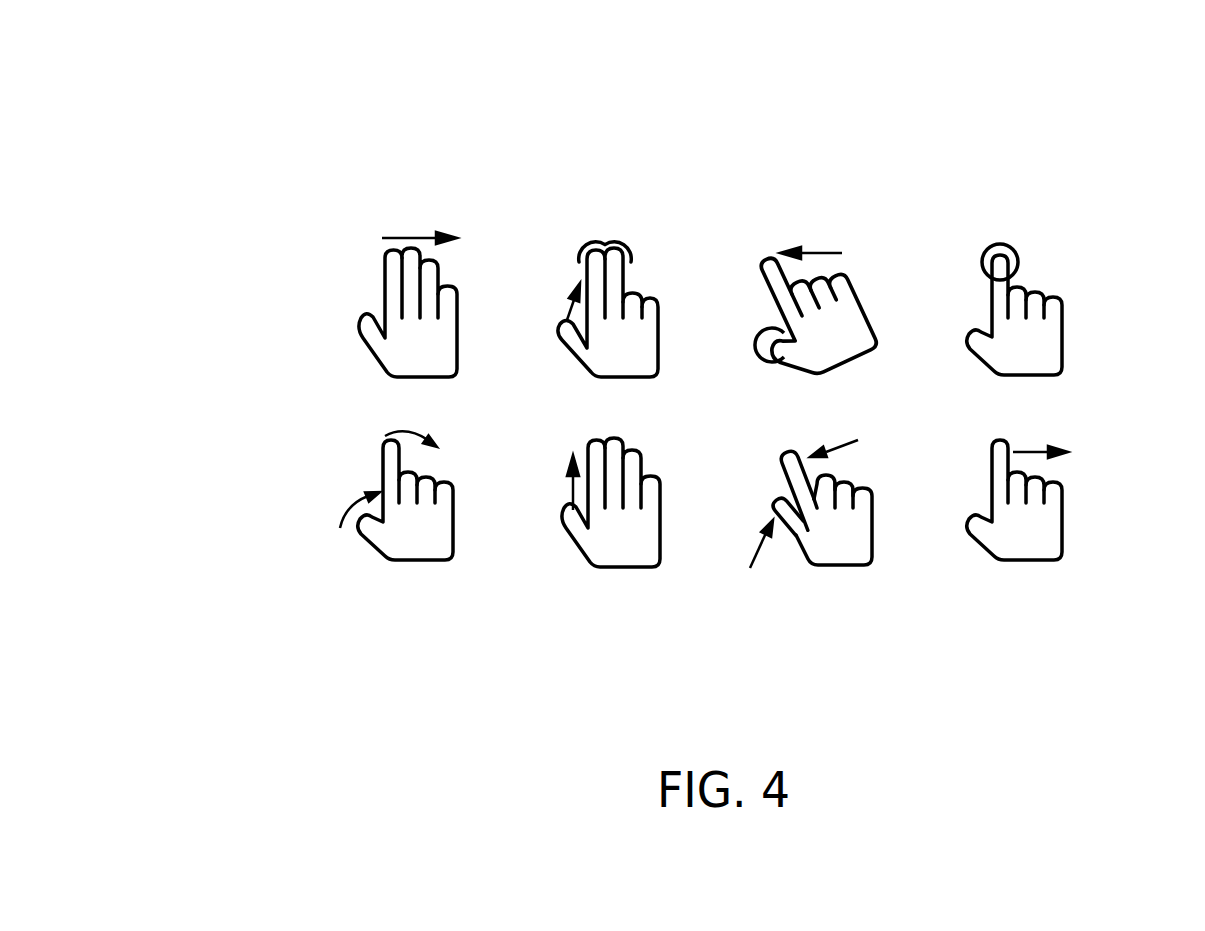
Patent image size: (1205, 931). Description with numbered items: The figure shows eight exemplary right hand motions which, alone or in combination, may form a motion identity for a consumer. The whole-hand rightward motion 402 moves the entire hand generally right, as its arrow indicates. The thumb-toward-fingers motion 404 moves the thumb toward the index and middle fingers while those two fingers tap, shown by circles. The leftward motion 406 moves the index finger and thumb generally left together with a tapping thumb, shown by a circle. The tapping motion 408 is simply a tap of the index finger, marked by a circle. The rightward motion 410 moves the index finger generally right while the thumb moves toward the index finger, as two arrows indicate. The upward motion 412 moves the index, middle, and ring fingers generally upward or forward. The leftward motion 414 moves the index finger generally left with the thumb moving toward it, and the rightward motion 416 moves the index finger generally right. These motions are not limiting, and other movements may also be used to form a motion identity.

The whole-hand rightward motion 402 is at (300, 322).
The thumb-toward-fingers motion with index and middle finger tap 404 is at (576, 183).
The index finger and thumb leftward motion with thumb tap 406 is at (803, 163).
The index finger tapping motion 408 is at (1078, 214).
The index finger rightward motion with thumb toward index finger 410 is at (375, 619).
The index, middle, and ring finger upward motion 412 is at (650, 604).
The index finger leftward motion with thumb toward index finger 414 is at (866, 622).
The index finger rightward motion 416 is at (1087, 607).